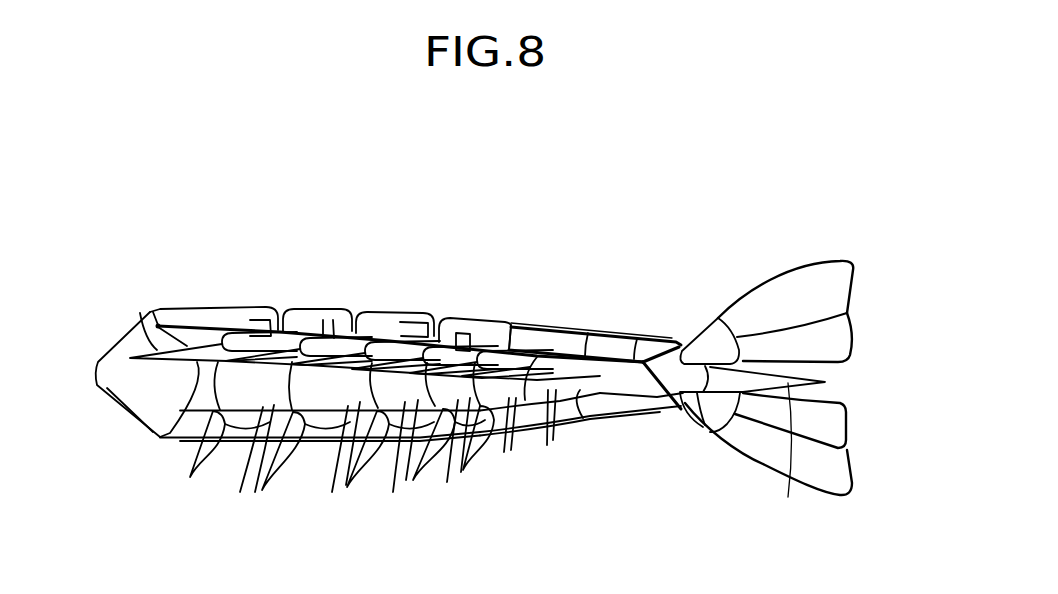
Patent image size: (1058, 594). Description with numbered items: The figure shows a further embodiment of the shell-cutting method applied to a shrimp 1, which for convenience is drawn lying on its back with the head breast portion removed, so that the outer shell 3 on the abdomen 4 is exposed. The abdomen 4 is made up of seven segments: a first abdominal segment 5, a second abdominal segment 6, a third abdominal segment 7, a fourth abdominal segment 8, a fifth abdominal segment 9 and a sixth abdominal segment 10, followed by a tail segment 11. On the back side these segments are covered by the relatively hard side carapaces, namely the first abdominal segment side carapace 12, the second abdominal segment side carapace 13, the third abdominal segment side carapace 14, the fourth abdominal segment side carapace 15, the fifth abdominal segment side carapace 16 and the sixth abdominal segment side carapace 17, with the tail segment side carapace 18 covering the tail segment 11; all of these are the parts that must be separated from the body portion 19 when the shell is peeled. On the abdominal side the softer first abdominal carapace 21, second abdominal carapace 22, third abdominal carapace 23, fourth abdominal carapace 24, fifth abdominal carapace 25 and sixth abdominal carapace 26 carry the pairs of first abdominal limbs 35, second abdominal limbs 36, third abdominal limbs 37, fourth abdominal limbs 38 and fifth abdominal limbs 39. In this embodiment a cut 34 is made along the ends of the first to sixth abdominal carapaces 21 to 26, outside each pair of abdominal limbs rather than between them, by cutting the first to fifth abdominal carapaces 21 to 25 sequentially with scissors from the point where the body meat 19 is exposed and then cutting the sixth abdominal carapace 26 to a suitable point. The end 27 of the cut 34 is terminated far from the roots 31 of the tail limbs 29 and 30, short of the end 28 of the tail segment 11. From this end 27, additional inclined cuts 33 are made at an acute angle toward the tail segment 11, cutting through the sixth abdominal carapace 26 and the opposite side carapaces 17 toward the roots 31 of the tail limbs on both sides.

The shrimp 1 is at (102, 320).
The outer shell 3 is at (585, 322).
The abdomen 4 is at (528, 288).
The first abdominal segment 5 is at (223, 455).
The second abdominal segment 6 is at (311, 455).
The third abdominal segment 7 is at (386, 455).
The fourth abdominal segment 8 is at (446, 455).
The fifth abdominal segment 9 is at (576, 440).
The sixth abdominal segment 10 is at (623, 432).
The tail segment 11 is at (846, 388).
The first abdominal segment side carapace 12 is at (240, 316).
The second abdominal segment side carapace 13 is at (320, 318).
The third abdominal segment side carapace 14 is at (398, 318).
The fourth abdominal segment side carapace 15 is at (497, 330).
The fifth abdominal segment side carapace 16 is at (553, 345).
The sixth abdominal segment side carapace 17 is at (611, 350).
The tail segment side carapace 18 is at (788, 497).
The body portion 19 is at (140, 405).
The first abdominal carapace 21 is at (247, 474).
The second abdominal carapace 22 is at (330, 480).
The third abdominal carapace 23 is at (400, 478).
The fourth abdominal carapace 24 is at (462, 472).
The fifth abdominal carapace 25 is at (509, 448).
The sixth abdominal carapace 26 is at (553, 426).
The end of the cut 27 is at (641, 344).
The end of the tail segment 28 is at (703, 427).
The tail limb 29 is at (750, 318).
The tail limb 30 is at (840, 342).
The roots of the tail limbs 31 is at (690, 338).
The inclined cuts 33 is at (657, 397).
The cut 34 is at (190, 306).
The first abdominal limbs 35 is at (136, 318).
The second abdominal limbs 36 is at (249, 355).
The third abdominal limbs 37 is at (315, 355).
The fourth abdominal limbs 38 is at (408, 335).
The fifth abdominal limbs 39 is at (457, 350).